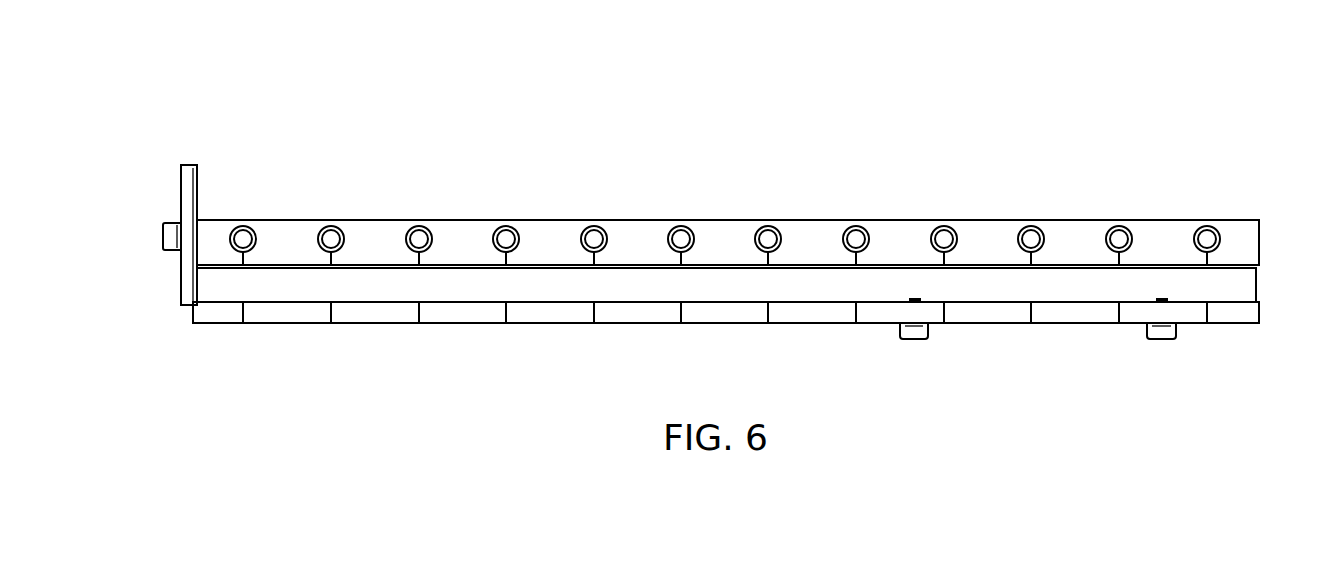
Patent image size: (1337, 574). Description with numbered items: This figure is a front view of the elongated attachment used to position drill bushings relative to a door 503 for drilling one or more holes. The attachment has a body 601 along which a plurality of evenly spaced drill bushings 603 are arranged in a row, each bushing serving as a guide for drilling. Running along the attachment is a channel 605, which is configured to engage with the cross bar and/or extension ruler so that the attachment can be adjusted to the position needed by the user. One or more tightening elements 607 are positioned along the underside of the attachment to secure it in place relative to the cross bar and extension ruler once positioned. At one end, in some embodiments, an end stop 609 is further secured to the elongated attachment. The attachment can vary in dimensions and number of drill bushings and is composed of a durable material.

The door 503 is at (1135, 80).
The body 601 is at (635, 220).
The drill bushings 603 is at (767, 221).
The channel 605 is at (1257, 280).
The tightening elements 607 is at (911, 342).
The end stop 609 is at (180, 190).